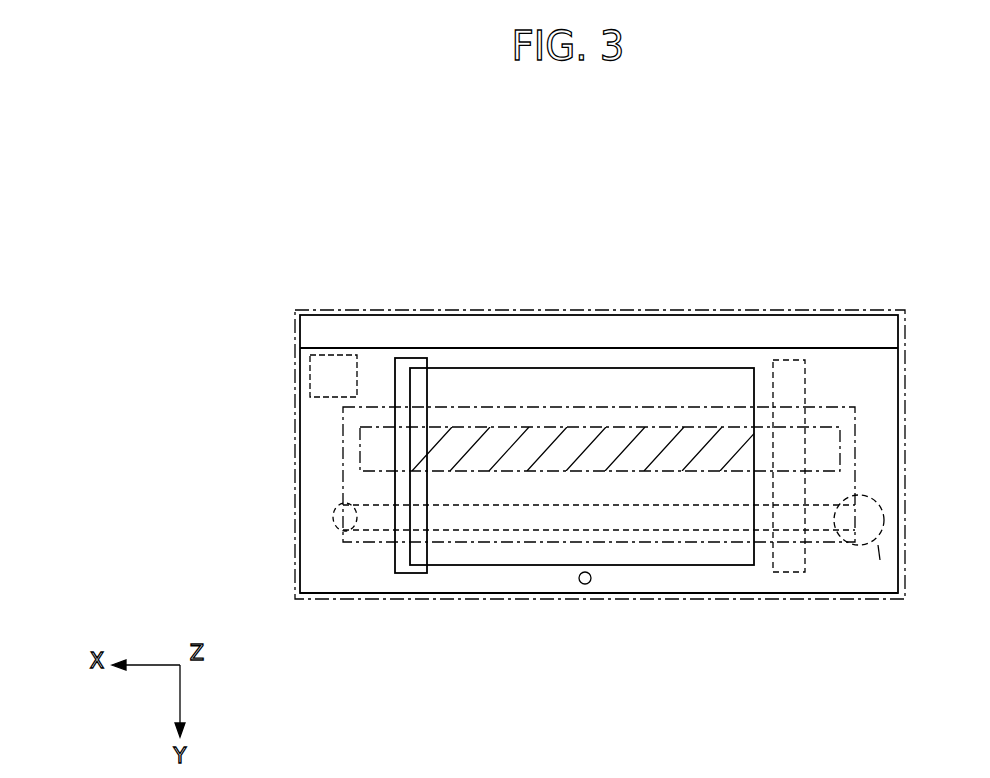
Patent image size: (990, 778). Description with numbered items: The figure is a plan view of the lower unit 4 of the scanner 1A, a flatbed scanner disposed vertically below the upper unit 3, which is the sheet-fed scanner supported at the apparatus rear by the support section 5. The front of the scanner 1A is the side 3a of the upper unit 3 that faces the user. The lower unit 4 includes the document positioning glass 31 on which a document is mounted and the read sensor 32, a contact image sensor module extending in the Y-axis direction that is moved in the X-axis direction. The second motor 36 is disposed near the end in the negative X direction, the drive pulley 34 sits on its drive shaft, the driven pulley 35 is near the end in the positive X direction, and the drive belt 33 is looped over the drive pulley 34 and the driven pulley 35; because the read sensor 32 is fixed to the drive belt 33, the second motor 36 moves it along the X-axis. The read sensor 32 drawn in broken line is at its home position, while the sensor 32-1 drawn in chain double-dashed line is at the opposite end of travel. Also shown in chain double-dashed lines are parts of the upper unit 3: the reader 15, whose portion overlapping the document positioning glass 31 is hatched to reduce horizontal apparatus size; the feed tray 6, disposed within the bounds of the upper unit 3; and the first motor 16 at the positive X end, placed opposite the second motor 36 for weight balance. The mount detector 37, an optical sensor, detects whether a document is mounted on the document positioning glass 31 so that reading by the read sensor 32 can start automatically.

The scanner 1A is at (584, 228).
The upper unit 3 is at (528, 308).
The side of the upper unit 3a is at (497, 600).
The lower unit 4 is at (355, 310).
The support section 5 is at (866, 333).
The feed tray 6 is at (343, 452).
The reader 15 is at (842, 440).
The first motor 16 is at (310, 372).
The document positioning glass 31 is at (582, 368).
The read sensor 32 is at (795, 358).
The sensor 32-1 is at (415, 358).
The drive belt 33 is at (632, 540).
The drive pulley 34 is at (878, 545).
The driven pulley 35 is at (335, 527).
The second motor 36 is at (884, 490).
The mount detector 37 is at (585, 585).